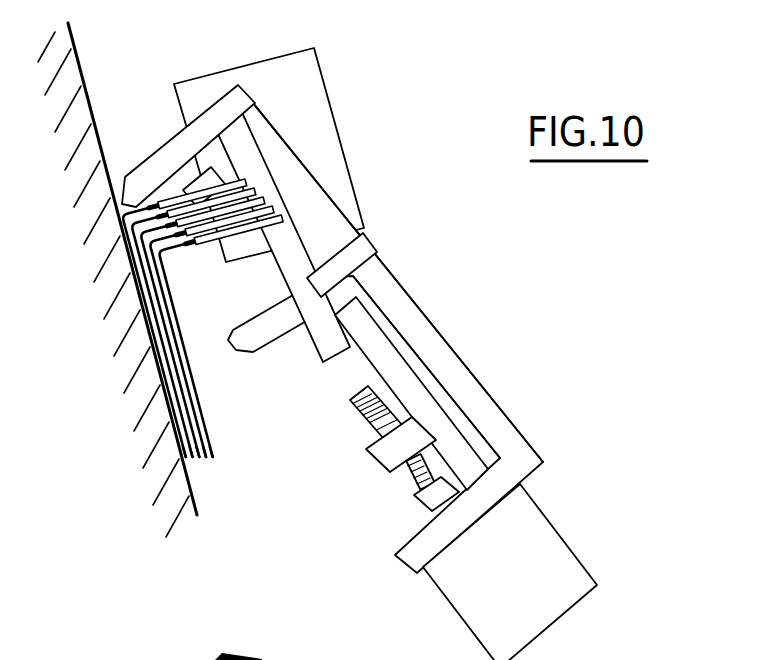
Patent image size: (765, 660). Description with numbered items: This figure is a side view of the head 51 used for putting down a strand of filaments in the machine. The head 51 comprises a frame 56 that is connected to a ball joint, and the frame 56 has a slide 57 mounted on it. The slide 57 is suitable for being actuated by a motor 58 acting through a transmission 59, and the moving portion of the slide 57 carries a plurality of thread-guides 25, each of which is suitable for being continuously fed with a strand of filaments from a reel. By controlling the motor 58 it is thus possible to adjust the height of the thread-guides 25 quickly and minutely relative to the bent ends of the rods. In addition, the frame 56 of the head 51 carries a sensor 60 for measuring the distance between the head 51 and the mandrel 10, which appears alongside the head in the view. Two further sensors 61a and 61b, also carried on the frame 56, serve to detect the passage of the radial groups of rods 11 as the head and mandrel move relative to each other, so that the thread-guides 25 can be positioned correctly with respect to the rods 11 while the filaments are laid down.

The mandrel 10 is at (83, 87).
The rods 11 is at (203, 428).
The thread-guides 25 is at (263, 208).
The head 51 is at (386, 338).
The frame 56 is at (505, 423).
The slide 57 is at (320, 342).
The motor 58 is at (560, 562).
The transmission 59 is at (376, 473).
The sensor 60 is at (327, 123).
The sensor 61a is at (240, 334).
The sensor 61b is at (112, 216).